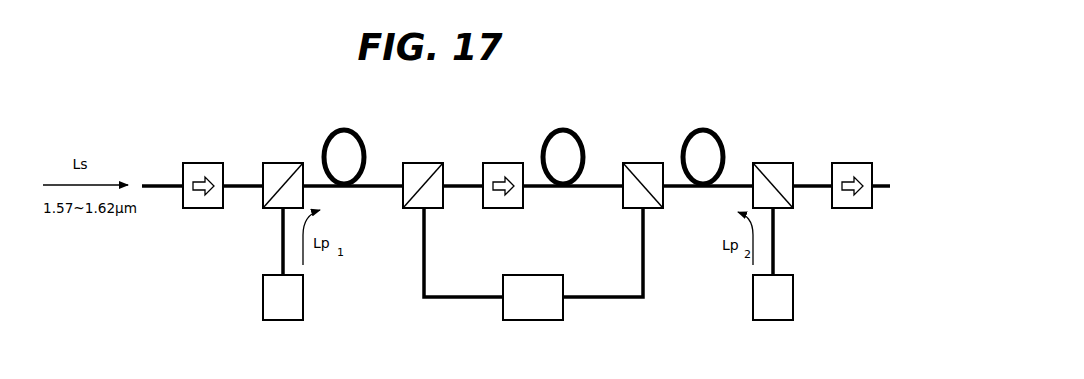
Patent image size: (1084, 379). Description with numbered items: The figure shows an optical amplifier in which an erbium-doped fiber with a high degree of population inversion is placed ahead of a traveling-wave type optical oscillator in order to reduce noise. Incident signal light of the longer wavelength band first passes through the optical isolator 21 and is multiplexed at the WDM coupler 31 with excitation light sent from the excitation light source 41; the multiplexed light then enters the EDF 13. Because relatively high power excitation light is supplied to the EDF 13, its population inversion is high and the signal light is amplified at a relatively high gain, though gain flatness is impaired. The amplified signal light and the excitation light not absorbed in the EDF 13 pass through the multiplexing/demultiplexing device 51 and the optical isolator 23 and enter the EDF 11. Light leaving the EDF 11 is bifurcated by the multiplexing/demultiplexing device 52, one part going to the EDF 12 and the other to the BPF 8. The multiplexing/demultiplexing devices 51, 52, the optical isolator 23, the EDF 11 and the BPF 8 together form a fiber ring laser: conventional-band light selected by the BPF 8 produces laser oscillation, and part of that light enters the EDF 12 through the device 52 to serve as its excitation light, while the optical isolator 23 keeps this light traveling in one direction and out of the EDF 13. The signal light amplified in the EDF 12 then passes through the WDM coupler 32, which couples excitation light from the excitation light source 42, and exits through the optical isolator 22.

The optical isolator 21 is at (183, 163).
The WDM coupler 31 is at (263, 163).
The EDF 13 is at (327, 142).
The multiplexing/demultiplexing device 51 is at (403, 163).
The optical isolator 23 is at (483, 163).
The EDF 11 is at (582, 142).
The multiplexing/demultiplexing device 52 is at (645, 163).
The EDF 12 is at (722, 140).
The WDM coupler 32 is at (793, 163).
The optical isolator 22 is at (872, 165).
The excitation light source 41 is at (263, 275).
The BPF 8 is at (503, 275).
The excitation light source 42 is at (793, 320).